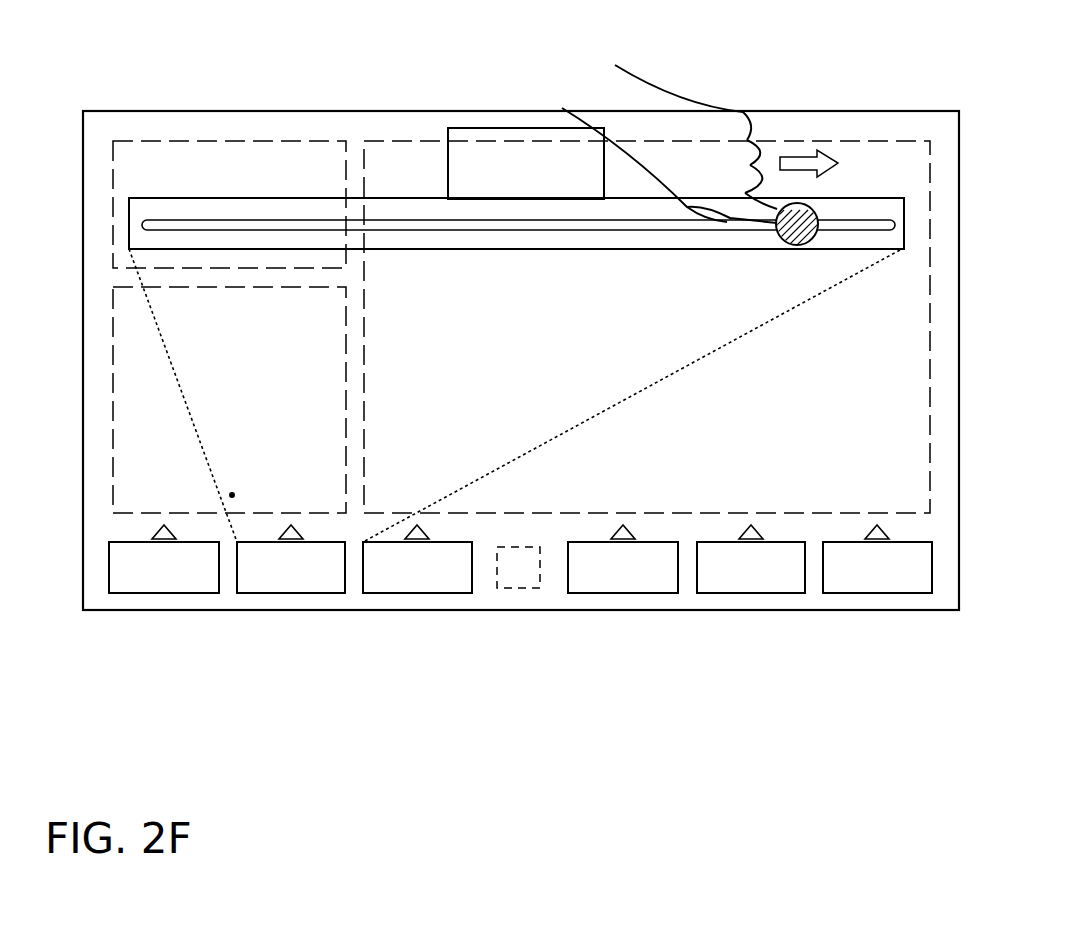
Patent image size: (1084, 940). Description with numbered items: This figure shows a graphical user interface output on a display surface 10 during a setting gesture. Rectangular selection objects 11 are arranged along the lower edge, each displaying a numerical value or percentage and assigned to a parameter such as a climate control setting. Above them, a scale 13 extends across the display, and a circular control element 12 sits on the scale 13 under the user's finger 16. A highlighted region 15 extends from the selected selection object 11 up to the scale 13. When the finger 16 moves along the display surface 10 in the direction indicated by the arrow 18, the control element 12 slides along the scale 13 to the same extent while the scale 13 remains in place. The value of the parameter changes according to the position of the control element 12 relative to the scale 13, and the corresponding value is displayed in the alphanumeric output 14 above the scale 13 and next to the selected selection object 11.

The display surface 10 is at (777, 110).
The selection objects 11 is at (885, 594).
The control element 12 is at (818, 205).
The scale 13 is at (156, 197).
The output 14 is at (498, 128).
The highlighted region 15 is at (229, 495).
The finger 16 is at (667, 90).
The arrow 18 is at (801, 155).